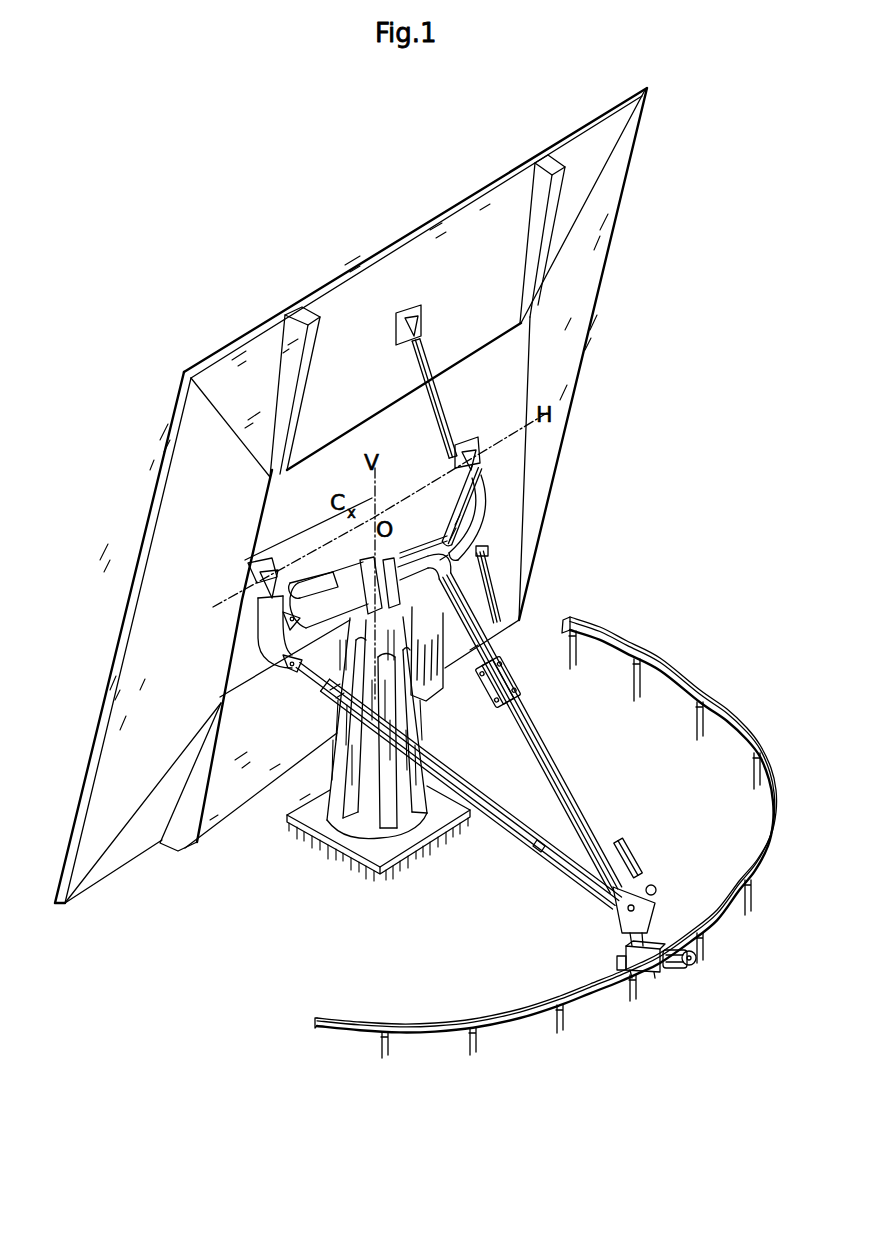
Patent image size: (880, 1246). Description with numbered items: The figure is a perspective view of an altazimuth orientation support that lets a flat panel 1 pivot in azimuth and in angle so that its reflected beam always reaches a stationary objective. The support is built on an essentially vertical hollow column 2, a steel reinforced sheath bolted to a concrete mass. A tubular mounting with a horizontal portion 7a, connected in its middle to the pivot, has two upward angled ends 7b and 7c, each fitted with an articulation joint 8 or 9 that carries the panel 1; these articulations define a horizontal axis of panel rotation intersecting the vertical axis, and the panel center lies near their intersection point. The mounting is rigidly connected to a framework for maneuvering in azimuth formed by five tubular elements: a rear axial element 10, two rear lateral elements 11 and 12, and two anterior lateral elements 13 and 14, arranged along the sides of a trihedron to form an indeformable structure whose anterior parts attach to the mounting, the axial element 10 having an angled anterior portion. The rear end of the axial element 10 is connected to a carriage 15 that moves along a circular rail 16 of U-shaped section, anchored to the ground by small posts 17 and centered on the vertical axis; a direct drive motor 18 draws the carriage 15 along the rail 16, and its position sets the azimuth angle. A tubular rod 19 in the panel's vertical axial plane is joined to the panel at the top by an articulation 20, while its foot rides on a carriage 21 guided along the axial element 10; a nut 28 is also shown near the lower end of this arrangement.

The flat panel 1 is at (222, 352).
The hollow column 2 is at (412, 722).
The horizontal portion 7a is at (347, 578).
The upward angled end 7b is at (262, 637).
The upward angled end 7c is at (488, 503).
The articulation joint 8 is at (281, 576).
The articulation joint 9 is at (480, 448).
The rear axial element 10 is at (570, 772).
The rear lateral element 11 is at (540, 848).
The rear lateral element 12 is at (490, 576).
The anterior lateral element 13 is at (322, 582).
The anterior lateral element 14 is at (460, 516).
The carriage 15 is at (643, 978).
The circular rail 16 is at (757, 853).
The small posts 17 is at (480, 1035).
The direct drive motor 18 is at (685, 970).
The tubular rod 19 is at (441, 394).
The articulation 20 is at (396, 316).
The carriage 21 is at (522, 682).
The nut 28 is at (656, 887).